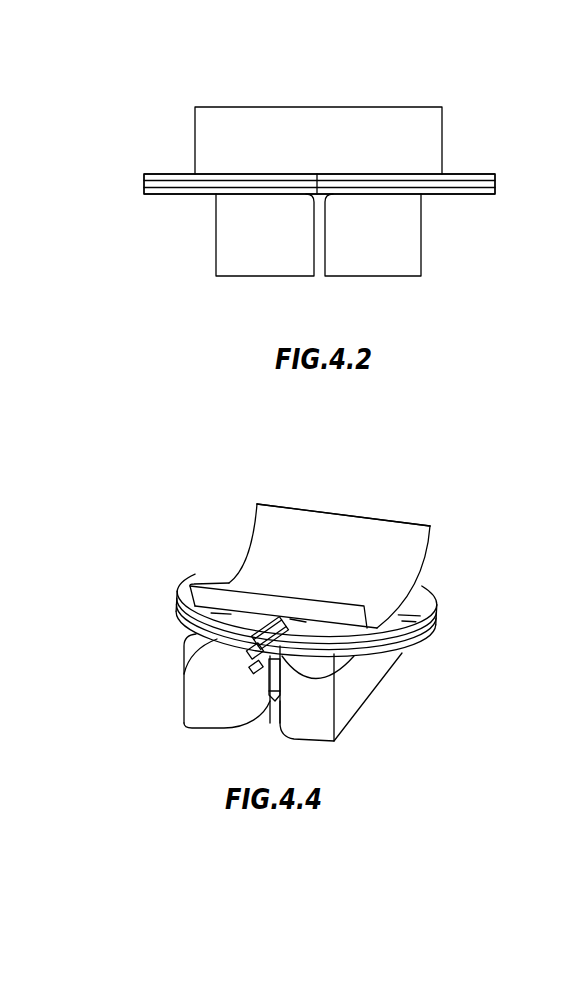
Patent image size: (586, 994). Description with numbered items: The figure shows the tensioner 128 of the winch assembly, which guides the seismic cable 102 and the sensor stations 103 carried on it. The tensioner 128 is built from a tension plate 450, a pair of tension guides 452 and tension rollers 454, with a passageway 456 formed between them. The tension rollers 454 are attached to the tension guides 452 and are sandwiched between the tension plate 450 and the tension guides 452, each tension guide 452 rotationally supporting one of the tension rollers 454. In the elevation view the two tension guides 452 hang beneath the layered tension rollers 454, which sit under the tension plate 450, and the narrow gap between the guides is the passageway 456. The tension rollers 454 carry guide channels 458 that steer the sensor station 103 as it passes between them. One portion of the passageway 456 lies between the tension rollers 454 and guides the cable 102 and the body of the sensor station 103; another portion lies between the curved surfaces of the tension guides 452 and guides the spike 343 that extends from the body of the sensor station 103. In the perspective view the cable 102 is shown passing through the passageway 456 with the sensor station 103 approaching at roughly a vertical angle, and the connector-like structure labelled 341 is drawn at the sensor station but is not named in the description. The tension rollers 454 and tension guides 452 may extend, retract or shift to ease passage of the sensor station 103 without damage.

In FIG. 4.2, the tensioner 128 is at (157, 83).
In FIG. 4.4, the tensioner 128 is at (225, 495).
In FIG. 4.2, the tension plate 450 is at (303, 122).
In FIG. 4.4, the tension plate 450 is at (337, 532).
In FIG. 4.2, the tension rollers 454 is at (160, 172).
In FIG. 4.4, the tension rollers 454 is at (410, 603).
In FIG. 4.2, the tension guides 452 is at (300, 275).
In FIG. 4.4, the tension guides 452 is at (218, 730).
In FIG. 4.2, the passageway 456 is at (317, 266).
In FIG. 4.4, the passageway 456 is at (263, 727).
In FIG. 4.4, the guide channels 458 is at (296, 617).
In FIG. 4.4, the connector body 341 is at (278, 673).
In FIG. 4.4, the spike 343 is at (288, 645).
In FIG. 4.4, the sensor station 103 is at (248, 648).
In FIG. 4.4, the seismic cable 102 is at (250, 665).